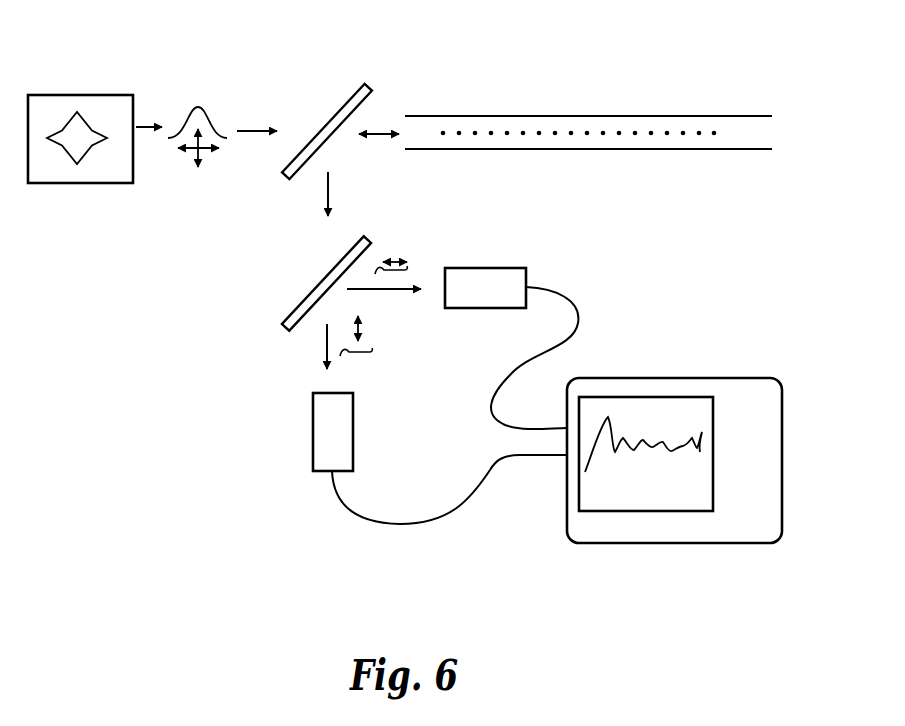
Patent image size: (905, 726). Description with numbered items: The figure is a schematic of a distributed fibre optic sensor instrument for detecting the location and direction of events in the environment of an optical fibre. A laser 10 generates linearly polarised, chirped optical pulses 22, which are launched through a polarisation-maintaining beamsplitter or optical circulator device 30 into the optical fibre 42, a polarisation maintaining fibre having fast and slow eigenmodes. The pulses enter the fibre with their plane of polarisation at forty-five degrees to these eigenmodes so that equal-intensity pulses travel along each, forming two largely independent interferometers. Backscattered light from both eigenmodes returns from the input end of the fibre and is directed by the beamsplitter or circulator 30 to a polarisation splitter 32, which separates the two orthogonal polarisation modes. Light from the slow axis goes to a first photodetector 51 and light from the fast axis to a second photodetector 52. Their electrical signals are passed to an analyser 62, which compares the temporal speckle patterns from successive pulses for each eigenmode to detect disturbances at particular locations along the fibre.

The laser 10 is at (92, 95).
The optical pulses 22 is at (208, 120).
The beamsplitter or optical circulator device 30 is at (325, 118).
The polarisation splitter 32 is at (318, 283).
The optical fibre 42 is at (565, 117).
The first photodetector 51 is at (477, 268).
The second photodetector 52 is at (353, 423).
The analyser 62 is at (692, 378).